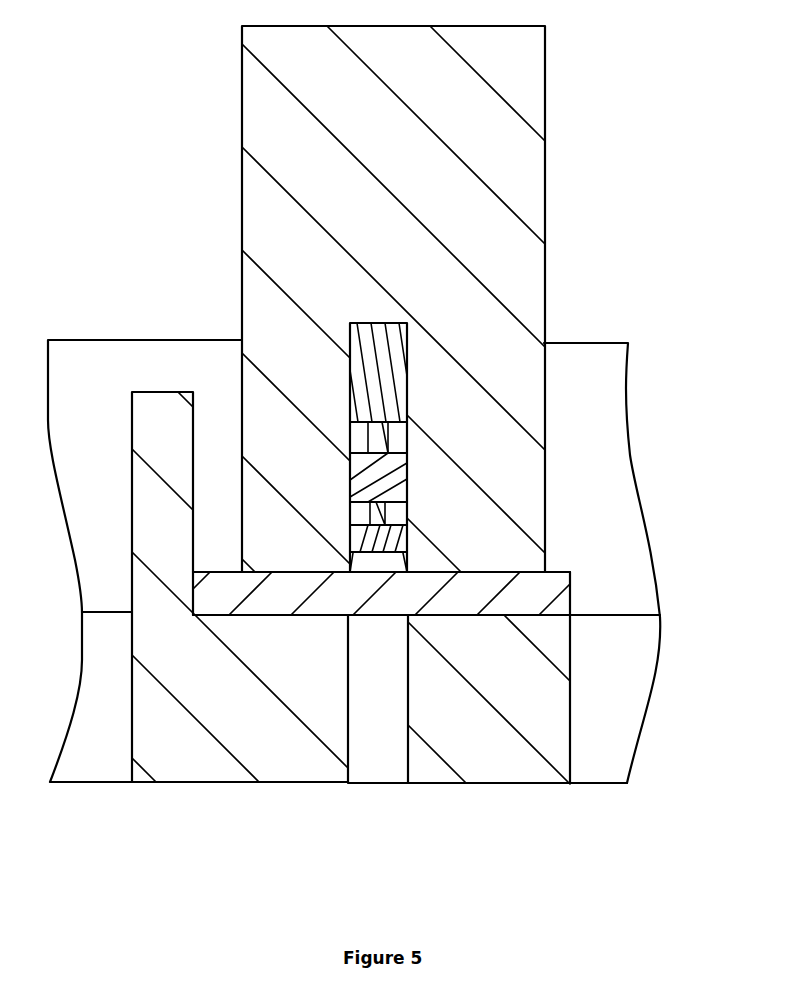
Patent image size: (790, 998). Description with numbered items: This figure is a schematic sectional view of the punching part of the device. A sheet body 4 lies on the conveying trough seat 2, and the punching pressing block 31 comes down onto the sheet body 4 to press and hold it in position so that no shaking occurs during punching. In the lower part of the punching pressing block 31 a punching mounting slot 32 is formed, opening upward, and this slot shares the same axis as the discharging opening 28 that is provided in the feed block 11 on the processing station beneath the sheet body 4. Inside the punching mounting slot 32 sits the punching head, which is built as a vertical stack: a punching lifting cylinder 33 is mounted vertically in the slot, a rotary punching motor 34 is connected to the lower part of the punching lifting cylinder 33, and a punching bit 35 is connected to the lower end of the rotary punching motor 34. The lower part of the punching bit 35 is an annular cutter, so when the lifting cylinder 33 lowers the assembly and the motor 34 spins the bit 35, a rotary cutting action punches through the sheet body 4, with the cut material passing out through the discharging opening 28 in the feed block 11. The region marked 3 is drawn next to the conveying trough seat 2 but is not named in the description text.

The conveying trough seat 2 is at (103, 395).
The lower housing portion 3 is at (102, 715).
The sheet body 4 is at (285, 593).
The feed block 11 is at (538, 702).
The discharging opening 28 is at (387, 730).
The punching pressing block 31 is at (467, 245).
The punching mounting slot 32 is at (358, 438).
The punching lifting cylinder 33 is at (390, 393).
The rotary punching motor 34 is at (390, 487).
The punching bit 35 is at (398, 547).